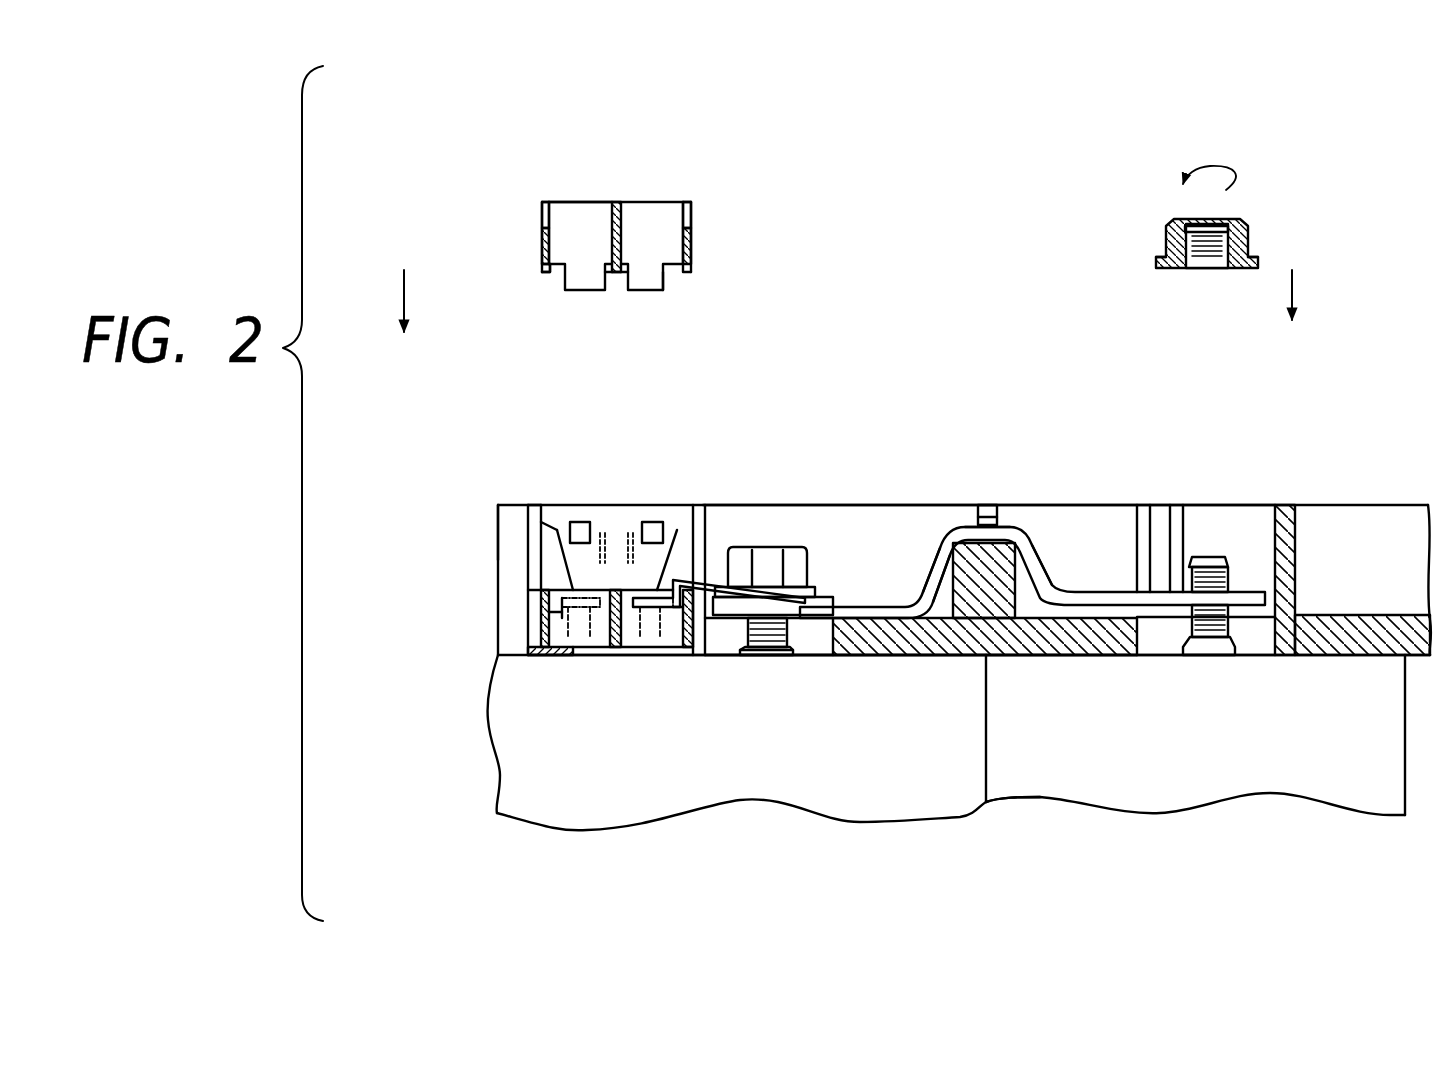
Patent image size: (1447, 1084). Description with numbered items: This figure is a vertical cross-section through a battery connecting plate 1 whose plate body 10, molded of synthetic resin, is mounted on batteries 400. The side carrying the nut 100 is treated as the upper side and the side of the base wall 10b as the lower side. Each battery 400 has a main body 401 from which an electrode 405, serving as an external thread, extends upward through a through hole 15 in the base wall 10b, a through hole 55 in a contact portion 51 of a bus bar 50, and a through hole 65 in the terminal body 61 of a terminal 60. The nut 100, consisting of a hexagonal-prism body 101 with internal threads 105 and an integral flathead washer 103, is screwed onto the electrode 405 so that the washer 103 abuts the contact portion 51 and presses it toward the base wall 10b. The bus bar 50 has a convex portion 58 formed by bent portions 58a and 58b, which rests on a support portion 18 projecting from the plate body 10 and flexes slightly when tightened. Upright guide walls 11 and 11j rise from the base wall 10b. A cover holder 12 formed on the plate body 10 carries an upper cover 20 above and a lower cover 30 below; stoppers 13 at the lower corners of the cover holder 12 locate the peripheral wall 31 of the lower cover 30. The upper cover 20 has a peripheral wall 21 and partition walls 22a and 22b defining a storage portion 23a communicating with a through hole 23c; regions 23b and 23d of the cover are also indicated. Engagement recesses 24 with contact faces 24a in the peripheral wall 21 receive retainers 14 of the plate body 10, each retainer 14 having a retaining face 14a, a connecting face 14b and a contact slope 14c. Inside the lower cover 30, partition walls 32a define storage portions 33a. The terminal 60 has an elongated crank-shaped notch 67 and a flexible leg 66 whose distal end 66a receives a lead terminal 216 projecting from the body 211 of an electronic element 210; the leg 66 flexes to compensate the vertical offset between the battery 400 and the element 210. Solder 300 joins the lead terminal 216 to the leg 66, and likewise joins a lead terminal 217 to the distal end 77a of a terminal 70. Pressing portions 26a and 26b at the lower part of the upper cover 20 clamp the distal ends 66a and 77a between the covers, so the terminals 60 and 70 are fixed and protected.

The battery connecting plate 1 is at (1340, 286).
The plate body 10 is at (1334, 503).
The base wall 10b is at (1117, 660).
The guide wall 11 is at (945, 505).
The guide wall 11j is at (533, 573).
The cover holder 12 is at (698, 505).
The stopper 13 is at (560, 655).
The retainer 14 is at (528, 525).
The retaining face 14a is at (497, 533).
The connecting face 14b is at (555, 507).
The contact slope 14c is at (543, 510).
The through hole 15 is at (833, 660).
The support portion 18 is at (1032, 660).
The upper cover 20 is at (708, 265).
The peripheral wall 21 is at (540, 255).
The partition wall 22a is at (616, 202).
The partition wall 22b is at (585, 202).
The storage portion 23a is at (667, 220).
The cavity inner wall 23b is at (652, 210).
The through hole 23c is at (653, 277).
The cavity opening 23d is at (562, 197).
The engagement recess 24 is at (540, 218).
The contact face 24a is at (540, 233).
The pressing portion 26a is at (553, 276).
The pressing portion 26b is at (615, 293).
The lower cover 30 is at (530, 590).
The peripheral wall 31 is at (562, 619).
The partition wall 32a is at (496, 812).
The storage portion 33a is at (680, 660).
The bus bar 50 is at (1045, 567).
The contact portion 51 is at (905, 592).
The through hole 55 is at (1237, 598).
The convex portion 58 is at (995, 528).
The bent portion 58a is at (1027, 530).
The bent portion 58b is at (1060, 563).
The terminal 60 is at (850, 597).
The terminal body 61 is at (725, 660).
The through hole 65 is at (767, 660).
The flexible leg 66 is at (740, 583).
The distal end portion 66a is at (615, 657).
The crank-shaped notch 67 is at (740, 660).
The terminal 70 is at (535, 655).
The distal end 77a is at (541, 647).
The nut 100 is at (1166, 215).
The body 101 is at (1223, 217).
The flathead washer 103 is at (1250, 257).
The internal thread 105 is at (1207, 268).
The electronic element 210 is at (568, 514).
The body 211 is at (637, 513).
The lead terminal 216 is at (603, 533).
The lead terminal 217 is at (618, 523).
The solder 300 is at (600, 660).
The battery 400 is at (1008, 768).
The main body 401 is at (855, 800).
The electrode 405 is at (807, 660).